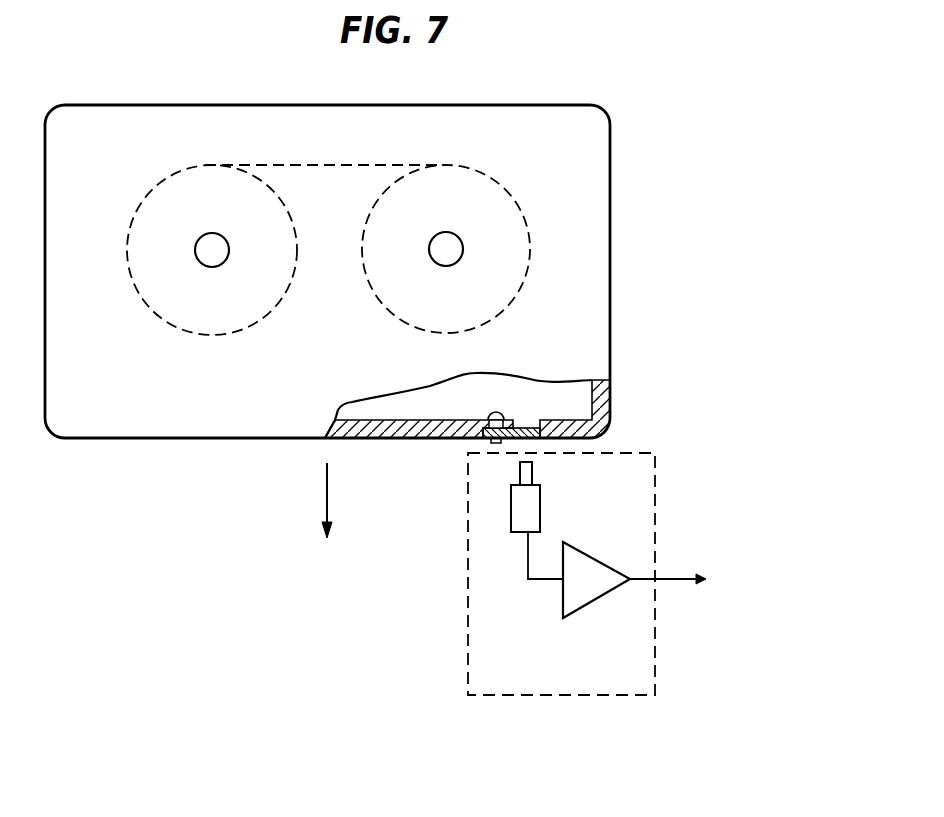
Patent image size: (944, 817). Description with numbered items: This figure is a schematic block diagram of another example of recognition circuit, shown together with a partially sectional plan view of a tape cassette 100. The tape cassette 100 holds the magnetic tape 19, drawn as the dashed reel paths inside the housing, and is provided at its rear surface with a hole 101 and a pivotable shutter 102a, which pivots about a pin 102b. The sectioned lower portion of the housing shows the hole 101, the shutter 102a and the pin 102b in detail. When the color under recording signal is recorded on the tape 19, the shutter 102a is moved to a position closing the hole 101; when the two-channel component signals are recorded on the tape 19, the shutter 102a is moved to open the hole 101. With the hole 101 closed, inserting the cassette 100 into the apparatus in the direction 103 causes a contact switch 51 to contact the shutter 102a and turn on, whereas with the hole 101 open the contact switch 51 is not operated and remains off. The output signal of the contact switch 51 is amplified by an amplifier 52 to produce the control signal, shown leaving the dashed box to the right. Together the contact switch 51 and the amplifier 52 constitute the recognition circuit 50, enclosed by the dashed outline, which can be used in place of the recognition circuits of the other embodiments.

The magnetic tape 19 is at (522, 214).
The tape cassette 100 is at (610, 217).
The hole 101 is at (532, 418).
The pivotable shutter 102a is at (533, 440).
The identification projection 102b is at (493, 440).
The insertion direction 103 is at (325, 481).
The recognition circuit 50 is at (627, 599).
The contact switch 51 is at (540, 505).
The amplifier 52 is at (598, 593).